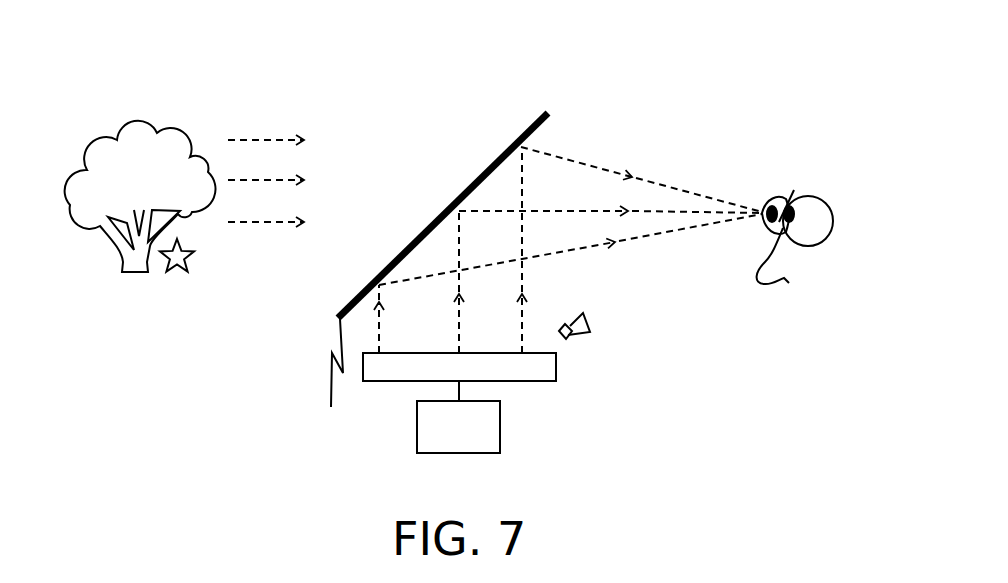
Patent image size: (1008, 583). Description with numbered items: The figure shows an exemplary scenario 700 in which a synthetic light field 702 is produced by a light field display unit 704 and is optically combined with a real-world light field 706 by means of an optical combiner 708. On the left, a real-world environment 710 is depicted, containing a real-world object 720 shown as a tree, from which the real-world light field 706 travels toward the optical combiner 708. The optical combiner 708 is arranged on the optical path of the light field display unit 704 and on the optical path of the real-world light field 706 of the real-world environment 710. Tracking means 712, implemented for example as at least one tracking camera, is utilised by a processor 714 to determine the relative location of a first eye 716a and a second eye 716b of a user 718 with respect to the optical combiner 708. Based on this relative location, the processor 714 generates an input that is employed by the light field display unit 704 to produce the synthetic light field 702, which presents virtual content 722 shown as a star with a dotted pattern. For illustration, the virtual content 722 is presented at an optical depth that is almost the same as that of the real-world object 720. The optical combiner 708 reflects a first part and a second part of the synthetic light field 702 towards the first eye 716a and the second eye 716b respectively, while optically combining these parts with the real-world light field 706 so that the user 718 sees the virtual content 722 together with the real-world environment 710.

The exemplary scenario 700 is at (341, 82).
The synthetic light field 702 is at (580, 156).
The light field display unit 704 is at (556, 367).
The real-world light field 706 is at (283, 211).
The optical combiner 708 is at (332, 376).
The real-world environment 710 is at (113, 104).
The tracking means 712 is at (592, 324).
The processor 714 is at (479, 440).
The first eye 716a is at (787, 196).
The second eye 716b is at (821, 238).
The user 718 is at (833, 190).
The real-world object 720 is at (98, 214).
The virtual content 722 is at (177, 280).